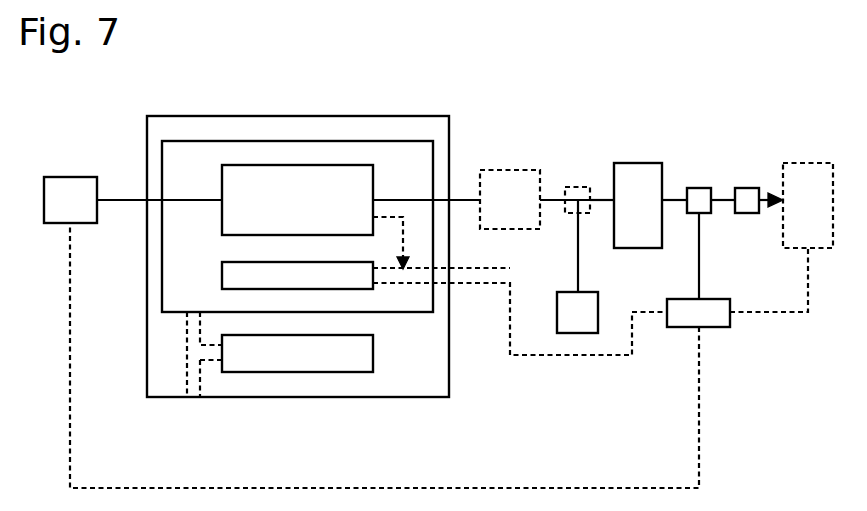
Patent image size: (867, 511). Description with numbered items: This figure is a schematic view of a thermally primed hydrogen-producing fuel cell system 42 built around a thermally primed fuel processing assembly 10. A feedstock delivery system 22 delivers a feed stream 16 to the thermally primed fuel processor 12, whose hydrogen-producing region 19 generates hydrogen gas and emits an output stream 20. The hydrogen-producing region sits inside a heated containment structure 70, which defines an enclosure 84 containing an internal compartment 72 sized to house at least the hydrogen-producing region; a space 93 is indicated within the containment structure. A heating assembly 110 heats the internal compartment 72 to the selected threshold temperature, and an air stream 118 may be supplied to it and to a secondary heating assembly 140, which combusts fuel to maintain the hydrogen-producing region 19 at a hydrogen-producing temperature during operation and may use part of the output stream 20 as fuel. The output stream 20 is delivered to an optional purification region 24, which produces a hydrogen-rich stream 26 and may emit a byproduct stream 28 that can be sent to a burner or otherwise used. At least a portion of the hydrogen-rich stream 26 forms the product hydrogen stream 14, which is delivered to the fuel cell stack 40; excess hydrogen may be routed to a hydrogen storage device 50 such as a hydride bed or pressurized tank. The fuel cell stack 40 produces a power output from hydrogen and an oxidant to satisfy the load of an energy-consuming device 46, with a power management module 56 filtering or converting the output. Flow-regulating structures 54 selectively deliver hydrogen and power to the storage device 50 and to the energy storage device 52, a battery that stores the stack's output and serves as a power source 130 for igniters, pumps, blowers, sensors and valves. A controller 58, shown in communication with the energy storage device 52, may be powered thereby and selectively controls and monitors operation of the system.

The thermally primed fuel processing assembly 10 is at (76, 105).
The thermally primed fuel processor 12 is at (114, 105).
The product hydrogen stream 14 is at (608, 202).
The feed stream 16 is at (127, 197).
The hydrogen-producing region 19 is at (270, 166).
The output stream 20 is at (455, 197).
The feedstock delivery system 22 is at (73, 176).
The purification region 24 is at (350, 164).
The hydrogen-rich stream 26 is at (548, 198).
The byproduct stream 28 is at (403, 229).
The fuel cell stack 40 is at (643, 161).
The fuel cell system 42 is at (685, 112).
The energy-consuming device 46 is at (802, 162).
The hydrogen storage device 50 is at (587, 291).
The energy storage device 52 is at (717, 298).
The flow-regulating structures 54 is at (578, 185).
The power management module 56 is at (747, 187).
The controller 58 is at (680, 333).
The heated containment structure 70 is at (184, 404).
The internal compartment 72 is at (178, 292).
The enclosure 84 is at (414, 402).
The space 93 is at (170, 320).
The heating assembly 110 is at (326, 374).
The air stream 118 is at (204, 380).
The power source 130 is at (717, 330).
The heating assembly 140 is at (221, 272).